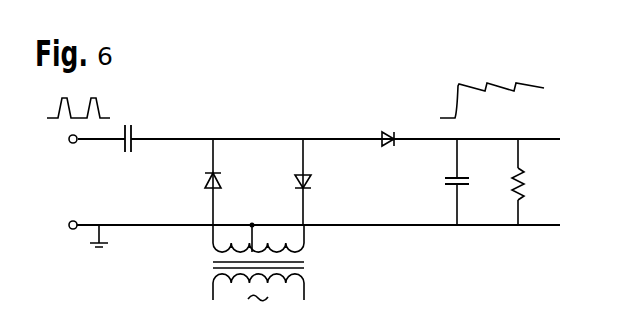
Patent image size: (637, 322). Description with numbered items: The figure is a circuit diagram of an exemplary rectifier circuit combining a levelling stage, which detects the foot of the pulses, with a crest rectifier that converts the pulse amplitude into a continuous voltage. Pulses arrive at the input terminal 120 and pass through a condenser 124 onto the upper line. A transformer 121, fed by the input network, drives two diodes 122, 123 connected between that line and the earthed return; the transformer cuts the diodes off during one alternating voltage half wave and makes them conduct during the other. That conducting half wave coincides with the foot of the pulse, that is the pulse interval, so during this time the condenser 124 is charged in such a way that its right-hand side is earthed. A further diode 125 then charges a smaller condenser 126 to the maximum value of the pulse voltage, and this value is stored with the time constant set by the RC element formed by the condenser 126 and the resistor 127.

The input terminal 120 is at (54, 138).
The transformer 121 is at (238, 262).
The diode 122 is at (235, 183).
The diode 123 is at (325, 183).
The condenser 124 is at (130, 153).
The diode 125 is at (389, 124).
The smaller condenser 126 is at (434, 183).
The RC element resistor 127 is at (541, 184).